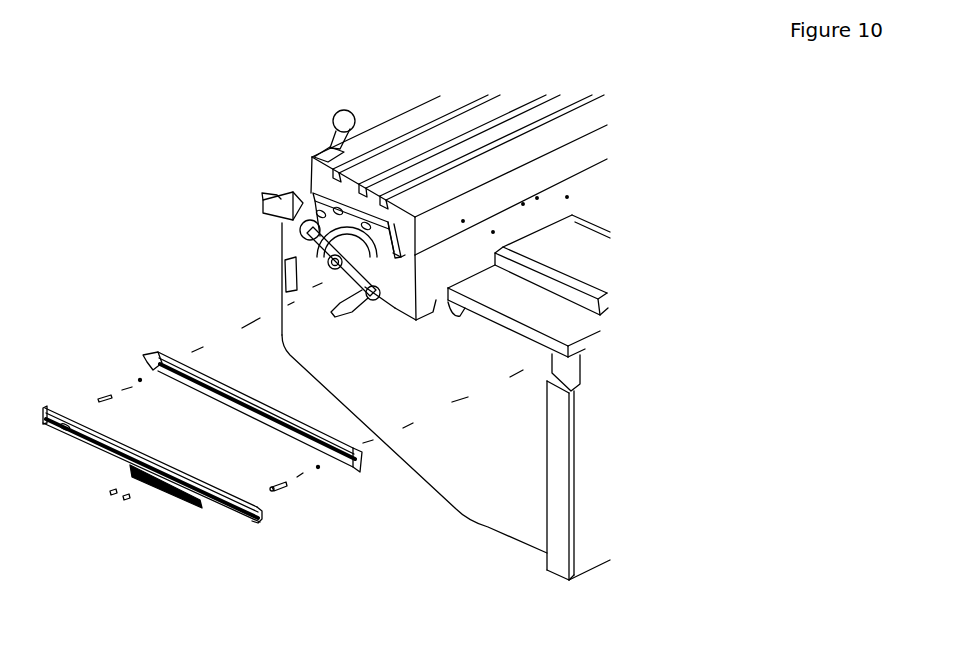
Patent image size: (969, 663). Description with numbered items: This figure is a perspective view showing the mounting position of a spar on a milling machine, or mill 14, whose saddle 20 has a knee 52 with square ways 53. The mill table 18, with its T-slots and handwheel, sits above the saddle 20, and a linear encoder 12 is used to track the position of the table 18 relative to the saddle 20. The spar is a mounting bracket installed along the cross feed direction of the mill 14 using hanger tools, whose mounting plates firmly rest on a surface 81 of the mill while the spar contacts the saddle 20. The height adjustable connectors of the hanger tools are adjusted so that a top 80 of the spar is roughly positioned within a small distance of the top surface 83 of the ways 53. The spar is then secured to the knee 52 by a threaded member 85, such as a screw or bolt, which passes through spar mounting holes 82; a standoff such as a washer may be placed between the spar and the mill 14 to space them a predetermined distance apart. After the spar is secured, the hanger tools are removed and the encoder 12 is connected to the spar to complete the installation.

The linear encoder 12 is at (233, 517).
The mill 14 is at (597, 437).
The mill table 18 is at (537, 120).
The saddle 20 is at (444, 272).
The knee 52 is at (507, 467).
The square ways 53 is at (493, 315).
The top of the spar 80 is at (252, 376).
The surface 81 is at (570, 328).
The spar mounting holes 82 is at (160, 371).
The top surface of the ways 83 is at (600, 292).
The threaded member 85 is at (288, 492).